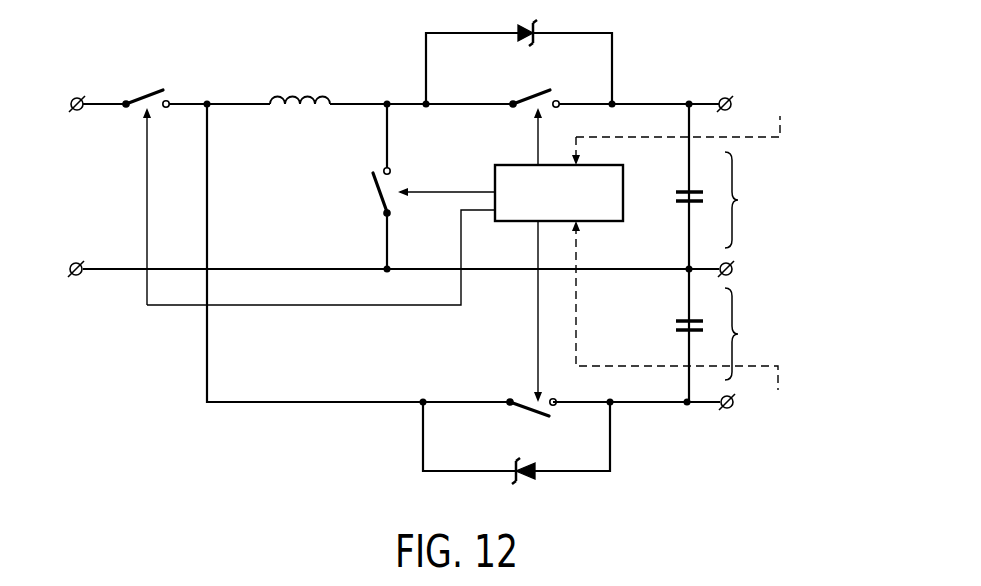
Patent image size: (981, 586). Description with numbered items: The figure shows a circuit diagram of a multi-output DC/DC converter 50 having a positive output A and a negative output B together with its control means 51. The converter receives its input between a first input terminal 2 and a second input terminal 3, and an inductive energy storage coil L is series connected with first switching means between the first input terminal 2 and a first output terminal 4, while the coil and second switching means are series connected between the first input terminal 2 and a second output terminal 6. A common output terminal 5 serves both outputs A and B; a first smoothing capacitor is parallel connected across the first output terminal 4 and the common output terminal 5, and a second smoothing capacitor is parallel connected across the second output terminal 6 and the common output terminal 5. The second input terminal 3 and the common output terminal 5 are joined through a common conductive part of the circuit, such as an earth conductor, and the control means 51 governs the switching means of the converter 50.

The first input terminal 2 is at (77, 97).
The second input terminal 3 is at (76, 277).
The first output terminal 4 is at (725, 97).
The common output terminal 5 is at (733, 269).
The second output terminal 6 is at (727, 410).
The multi-output DC/DC converter 50 is at (181, 366).
The control means 51 is at (506, 224).